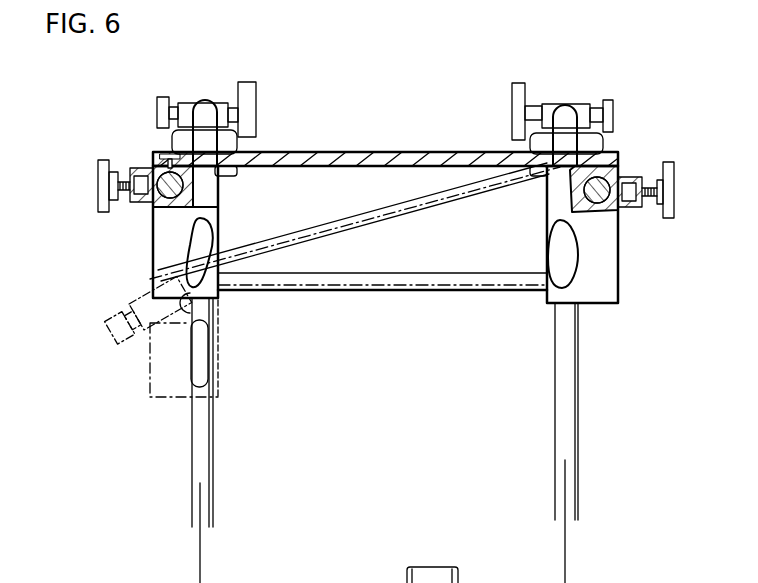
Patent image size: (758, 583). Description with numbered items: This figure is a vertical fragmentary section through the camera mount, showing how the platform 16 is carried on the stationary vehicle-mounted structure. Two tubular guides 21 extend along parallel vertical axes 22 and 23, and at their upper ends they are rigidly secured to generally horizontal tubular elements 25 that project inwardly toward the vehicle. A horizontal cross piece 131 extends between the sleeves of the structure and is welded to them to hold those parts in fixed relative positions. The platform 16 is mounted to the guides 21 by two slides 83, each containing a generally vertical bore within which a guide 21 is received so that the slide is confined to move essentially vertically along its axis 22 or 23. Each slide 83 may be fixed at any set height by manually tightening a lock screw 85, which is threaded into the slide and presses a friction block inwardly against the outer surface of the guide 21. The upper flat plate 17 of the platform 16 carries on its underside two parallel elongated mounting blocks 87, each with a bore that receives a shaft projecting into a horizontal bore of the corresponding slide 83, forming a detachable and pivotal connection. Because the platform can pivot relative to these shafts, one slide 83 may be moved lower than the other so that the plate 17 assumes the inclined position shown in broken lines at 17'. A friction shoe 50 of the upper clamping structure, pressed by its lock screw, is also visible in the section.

The platform 16 is at (375, 150).
The flat plate 17 is at (432, 129).
The inclined plate position 17' is at (355, 222).
The tubular guides 21 is at (202, 415).
The vertical axis 22 is at (200, 553).
The vertical axis 23 is at (565, 553).
The tubular elements 25 is at (207, 113).
The friction shoe 50 is at (155, 170).
The slides 83 is at (210, 217).
The lock screw 85 is at (197, 238).
The mounting blocks 87 is at (224, 181).
The horizontal cross piece 131 is at (342, 283).